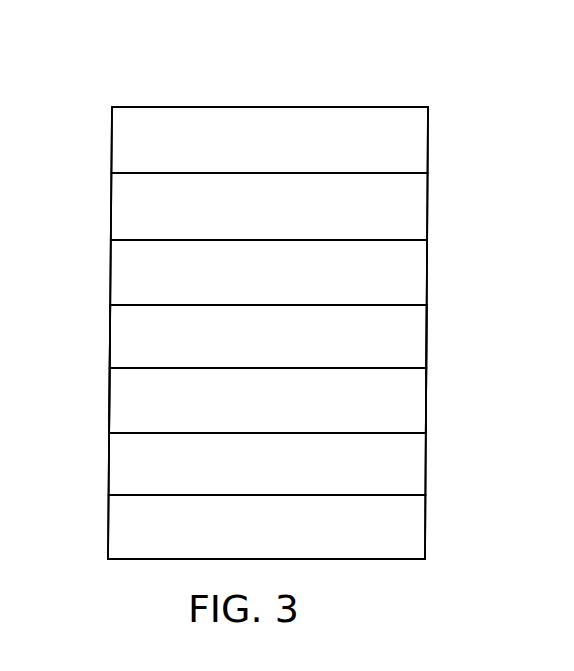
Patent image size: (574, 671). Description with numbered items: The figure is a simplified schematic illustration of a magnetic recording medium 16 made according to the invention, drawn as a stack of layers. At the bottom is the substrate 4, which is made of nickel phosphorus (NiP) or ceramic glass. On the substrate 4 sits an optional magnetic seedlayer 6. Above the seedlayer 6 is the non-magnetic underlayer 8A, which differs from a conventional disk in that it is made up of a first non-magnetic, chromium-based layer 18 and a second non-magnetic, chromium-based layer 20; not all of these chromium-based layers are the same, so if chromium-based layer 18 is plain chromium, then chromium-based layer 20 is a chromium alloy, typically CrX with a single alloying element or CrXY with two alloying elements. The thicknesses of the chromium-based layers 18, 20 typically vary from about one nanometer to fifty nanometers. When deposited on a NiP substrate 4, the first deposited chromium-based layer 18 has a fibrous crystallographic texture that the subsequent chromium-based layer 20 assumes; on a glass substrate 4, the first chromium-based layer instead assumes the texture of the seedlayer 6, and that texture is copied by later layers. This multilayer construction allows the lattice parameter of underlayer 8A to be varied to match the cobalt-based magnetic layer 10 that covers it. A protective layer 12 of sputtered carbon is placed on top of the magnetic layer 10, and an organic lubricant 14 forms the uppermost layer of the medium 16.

The magnetic recording medium 16 is at (422, 60).
The organic lubricant 14 is at (428, 137).
The protective layer 12 is at (427, 207).
The magnetic layer 10 is at (427, 268).
The underlayer 8A is at (92, 308).
The second non-magnetic chromium-based layer 20 is at (426, 333).
The first non-magnetic chromium-based layer 18 is at (426, 401).
The magnetic seedlayer 6 is at (426, 460).
The substrate 4 is at (425, 525).